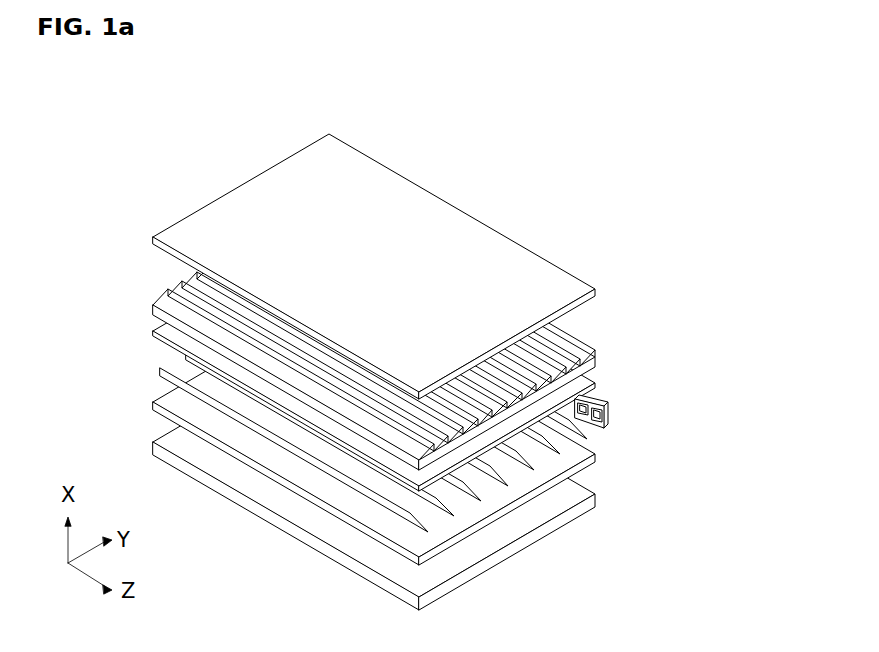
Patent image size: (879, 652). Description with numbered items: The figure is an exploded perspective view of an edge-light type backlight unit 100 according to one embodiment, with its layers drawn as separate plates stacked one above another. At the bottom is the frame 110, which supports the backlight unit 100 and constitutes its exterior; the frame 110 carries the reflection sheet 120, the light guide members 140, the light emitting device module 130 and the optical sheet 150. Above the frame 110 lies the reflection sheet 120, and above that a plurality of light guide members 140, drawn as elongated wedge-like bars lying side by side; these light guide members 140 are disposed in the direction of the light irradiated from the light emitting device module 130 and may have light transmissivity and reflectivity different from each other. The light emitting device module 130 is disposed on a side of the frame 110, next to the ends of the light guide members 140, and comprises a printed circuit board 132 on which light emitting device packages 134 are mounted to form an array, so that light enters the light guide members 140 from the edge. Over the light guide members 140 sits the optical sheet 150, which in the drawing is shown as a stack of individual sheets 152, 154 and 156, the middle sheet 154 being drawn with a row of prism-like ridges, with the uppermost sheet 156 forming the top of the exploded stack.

The backlight unit 100 is at (162, 108).
The frame 110 is at (571, 513).
The reflection sheet 120 is at (489, 503).
The light emitting device module 130 is at (699, 417).
The printed circuit board 132 is at (608, 395).
The light emitting device packages 134 is at (608, 413).
The light guide members 140 is at (370, 499).
The optical sheet 150 is at (465, 312).
The diffusion sheet 152 is at (585, 385).
The prism sheet 154 is at (557, 338).
The protection sheet 156 is at (412, 266).